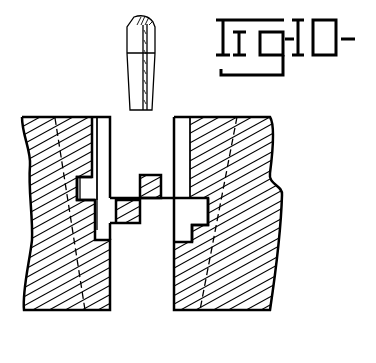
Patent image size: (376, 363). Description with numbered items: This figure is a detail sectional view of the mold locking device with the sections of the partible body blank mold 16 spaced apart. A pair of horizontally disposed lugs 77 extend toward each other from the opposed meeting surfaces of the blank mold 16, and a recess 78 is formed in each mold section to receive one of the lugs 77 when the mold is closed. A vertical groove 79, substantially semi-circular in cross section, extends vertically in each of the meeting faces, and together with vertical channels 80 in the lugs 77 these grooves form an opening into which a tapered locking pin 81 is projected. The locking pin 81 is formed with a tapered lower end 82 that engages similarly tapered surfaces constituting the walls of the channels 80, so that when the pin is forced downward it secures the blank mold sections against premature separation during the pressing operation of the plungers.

The partible body blank mold 16 is at (268, 240).
The lugs 77 is at (160, 203).
The recess 78 is at (88, 186).
The vertical groove 79 is at (104, 117).
The vertical channels 80 is at (167, 184).
The tapered locking pin 81 is at (137, 38).
The tapered lower end 82 is at (142, 68).